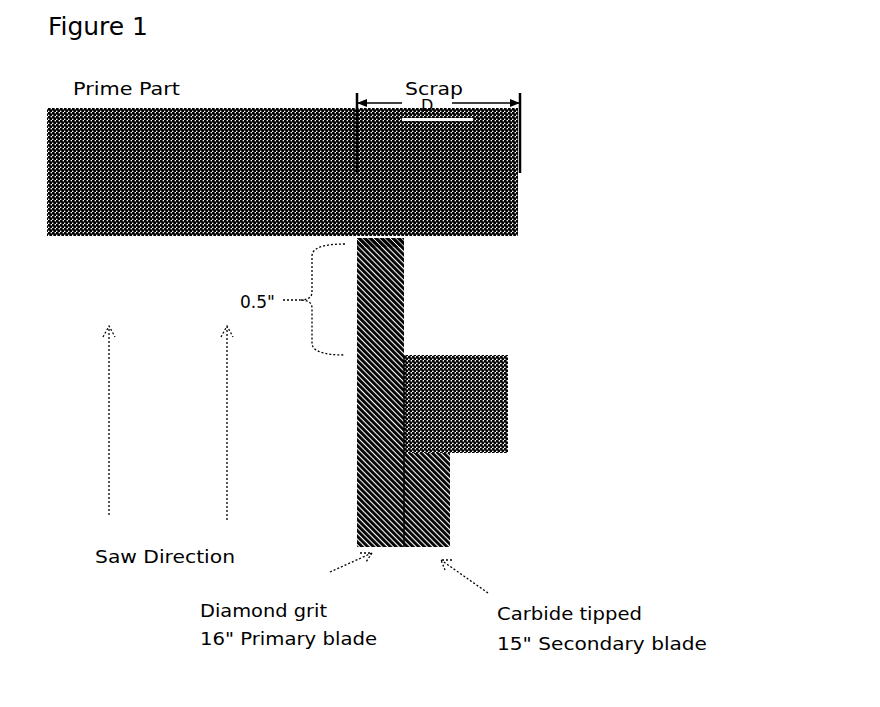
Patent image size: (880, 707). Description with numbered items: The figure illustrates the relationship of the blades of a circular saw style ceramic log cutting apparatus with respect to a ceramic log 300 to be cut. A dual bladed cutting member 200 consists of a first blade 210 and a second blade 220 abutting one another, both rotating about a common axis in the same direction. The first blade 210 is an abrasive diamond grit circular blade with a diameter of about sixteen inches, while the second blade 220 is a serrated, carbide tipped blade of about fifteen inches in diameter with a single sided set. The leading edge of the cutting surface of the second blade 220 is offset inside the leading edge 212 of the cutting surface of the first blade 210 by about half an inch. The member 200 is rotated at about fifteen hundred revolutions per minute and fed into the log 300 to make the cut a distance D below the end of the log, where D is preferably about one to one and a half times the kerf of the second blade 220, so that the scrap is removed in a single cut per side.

The ceramic log 300 is at (282, 172).
The dual bladed cutting member 200 is at (472, 400).
The first blade 210 is at (458, 343).
The leading edge of the cutting surface of the first blade 212 is at (385, 244).
The second blade 220 is at (452, 500).